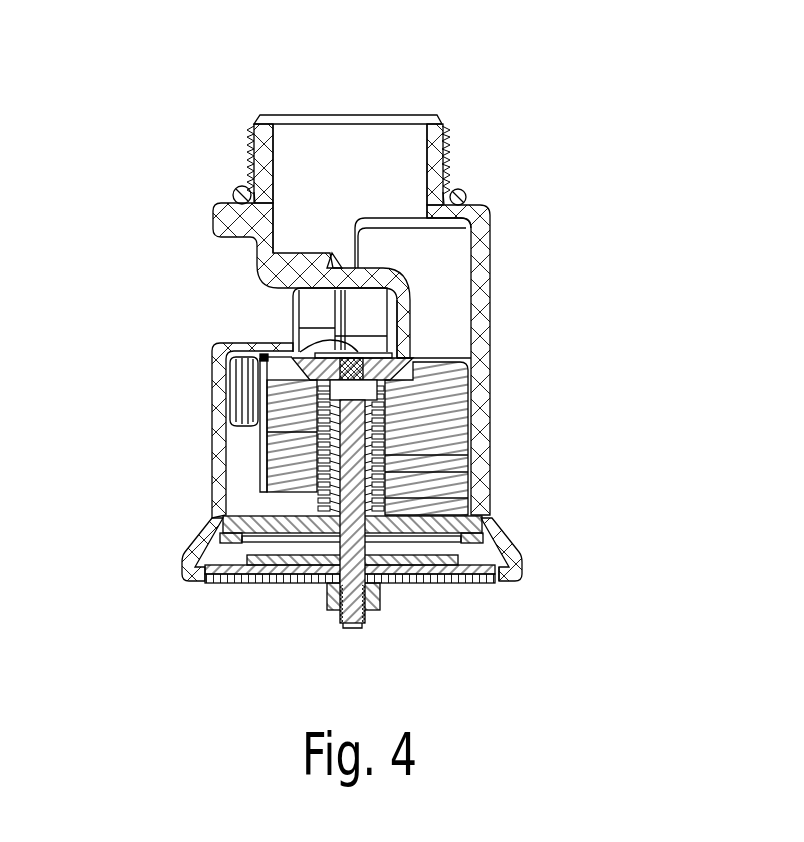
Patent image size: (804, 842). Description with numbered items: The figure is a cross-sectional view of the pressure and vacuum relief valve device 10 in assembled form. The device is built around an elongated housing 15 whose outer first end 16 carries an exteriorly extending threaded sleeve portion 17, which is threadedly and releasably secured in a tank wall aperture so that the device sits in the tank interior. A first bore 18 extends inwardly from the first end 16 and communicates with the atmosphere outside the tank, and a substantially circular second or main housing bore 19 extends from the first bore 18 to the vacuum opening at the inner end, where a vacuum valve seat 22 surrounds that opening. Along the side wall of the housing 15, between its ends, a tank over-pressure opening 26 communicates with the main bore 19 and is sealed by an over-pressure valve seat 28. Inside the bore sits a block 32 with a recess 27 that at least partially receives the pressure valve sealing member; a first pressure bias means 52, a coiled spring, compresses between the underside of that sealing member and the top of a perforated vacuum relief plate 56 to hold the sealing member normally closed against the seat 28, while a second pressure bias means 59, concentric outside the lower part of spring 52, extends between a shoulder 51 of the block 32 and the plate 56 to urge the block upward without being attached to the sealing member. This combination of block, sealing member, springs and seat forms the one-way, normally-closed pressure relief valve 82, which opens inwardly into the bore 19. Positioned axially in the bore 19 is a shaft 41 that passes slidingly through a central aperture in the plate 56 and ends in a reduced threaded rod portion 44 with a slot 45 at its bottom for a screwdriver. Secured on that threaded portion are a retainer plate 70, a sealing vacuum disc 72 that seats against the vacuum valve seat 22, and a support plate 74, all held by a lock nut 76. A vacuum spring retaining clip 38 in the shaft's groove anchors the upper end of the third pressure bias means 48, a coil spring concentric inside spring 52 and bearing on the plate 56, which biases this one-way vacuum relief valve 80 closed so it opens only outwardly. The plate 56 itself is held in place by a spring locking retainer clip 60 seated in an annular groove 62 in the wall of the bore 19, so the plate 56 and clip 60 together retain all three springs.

The pressure and vacuum relief valve device 10 is at (393, 46).
The housing 15 is at (490, 240).
The first end 16 is at (312, 115).
The threaded sleeve portion 17 is at (455, 130).
The first bore 18 is at (252, 125).
The second or main housing bore 19 is at (238, 484).
The vacuum valve seat 22 is at (507, 578).
The tank over-pressure opening 26 is at (290, 338).
The recess or valve sealing member seat 27 is at (230, 375).
The over-pressure valve seat 28 is at (410, 357).
The block 32 is at (457, 443).
The vacuum spring retaining clip 38 is at (262, 432).
The shaft 41 is at (400, 472).
The reduced threaded rod portion 44 is at (373, 610).
The slot 45 is at (353, 623).
The third pressure bias means 48 is at (392, 455).
The shoulder 51 is at (262, 462).
The first pressure bias means 52 is at (385, 408).
The perforated vacuum relief plate 56 is at (222, 524).
The second pressure bias means 59 is at (440, 498).
The spring locking retainer clip 60 is at (517, 553).
The annular groove 62 is at (225, 537).
The retainer plate 70 is at (197, 564).
The sealing vacuum disc 72 is at (200, 577).
The support plate 74 is at (237, 579).
The lock nut 76 is at (332, 608).
The vacuum relief valve 80 is at (471, 606).
The pressure relief valve 82 is at (260, 357).